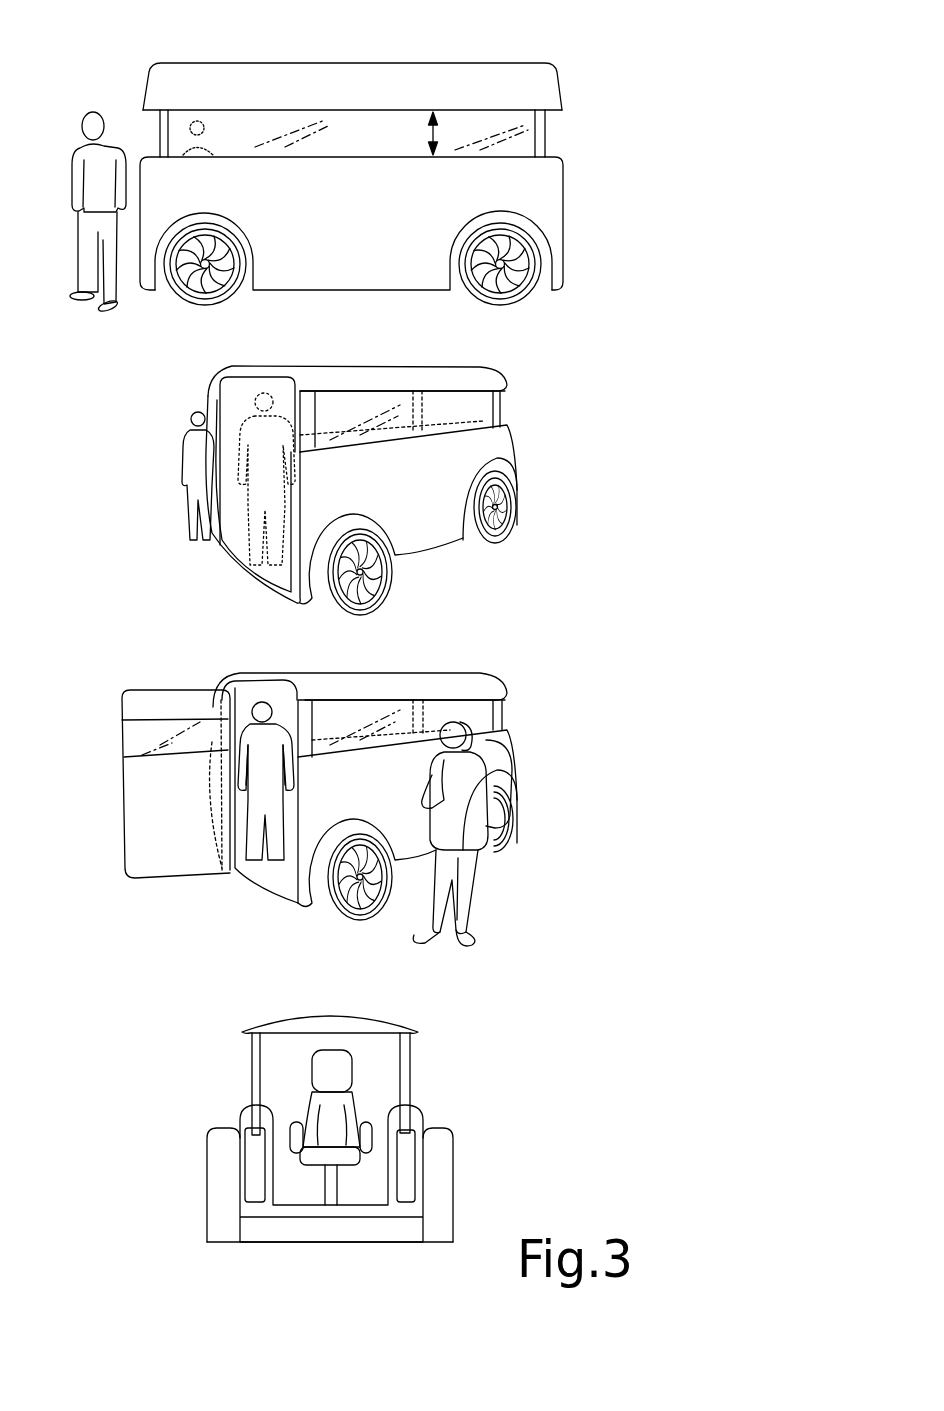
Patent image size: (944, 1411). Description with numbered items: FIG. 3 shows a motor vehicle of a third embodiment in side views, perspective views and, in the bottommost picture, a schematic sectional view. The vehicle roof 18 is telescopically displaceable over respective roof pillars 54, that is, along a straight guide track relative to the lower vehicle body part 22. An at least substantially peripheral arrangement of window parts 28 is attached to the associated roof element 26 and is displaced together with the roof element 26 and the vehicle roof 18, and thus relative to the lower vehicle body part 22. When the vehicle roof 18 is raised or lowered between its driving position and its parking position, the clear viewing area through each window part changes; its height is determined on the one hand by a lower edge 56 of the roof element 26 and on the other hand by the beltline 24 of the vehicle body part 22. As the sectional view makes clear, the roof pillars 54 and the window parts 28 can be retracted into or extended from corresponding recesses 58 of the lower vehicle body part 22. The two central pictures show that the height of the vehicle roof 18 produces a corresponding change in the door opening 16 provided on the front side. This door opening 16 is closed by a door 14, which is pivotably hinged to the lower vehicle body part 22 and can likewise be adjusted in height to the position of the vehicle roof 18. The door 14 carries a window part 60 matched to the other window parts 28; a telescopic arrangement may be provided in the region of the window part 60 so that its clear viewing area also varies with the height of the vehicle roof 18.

The door 14 is at (217, 553).
The door opening 16 is at (195, 552).
The vehicle roof 18 is at (556, 53).
The lower vehicle body part 22 is at (600, 214).
The beltline 24 is at (335, 157).
The roof element 26 is at (235, 85).
The window parts 28 is at (463, 125).
The roof pillars 54 is at (160, 135).
The lower edge of the roof element 56 is at (548, 118).
The recesses 58 is at (252, 1163).
The window part of the door 60 is at (135, 738).